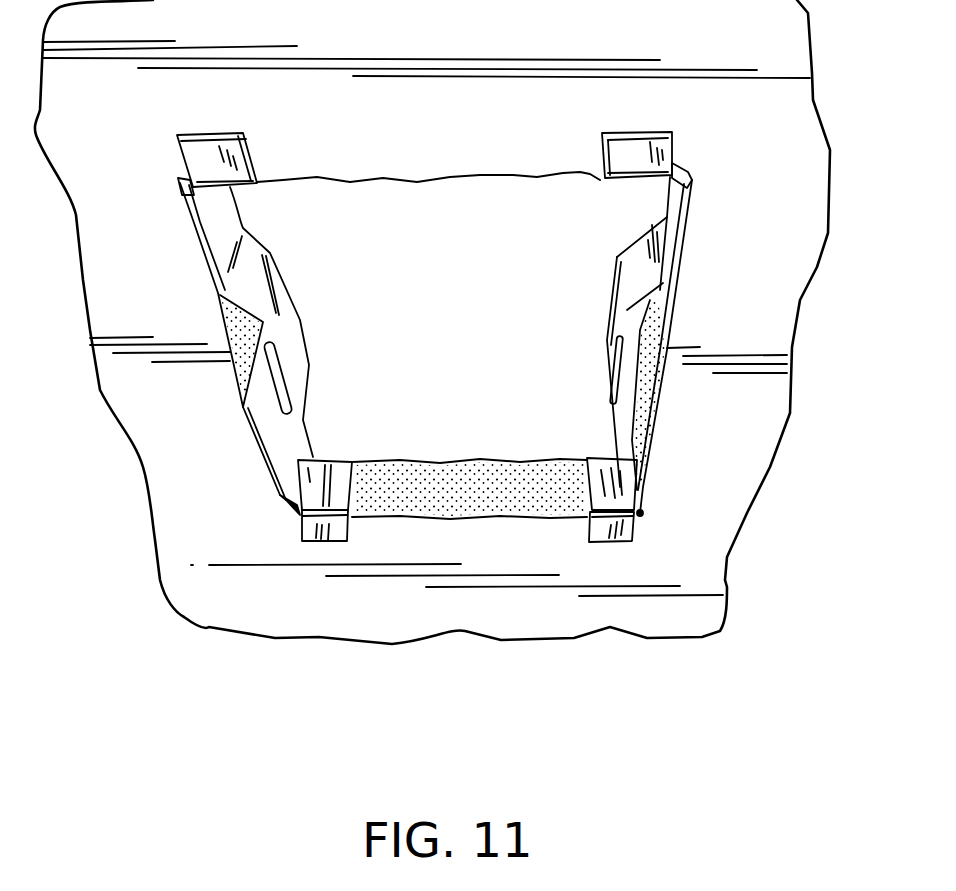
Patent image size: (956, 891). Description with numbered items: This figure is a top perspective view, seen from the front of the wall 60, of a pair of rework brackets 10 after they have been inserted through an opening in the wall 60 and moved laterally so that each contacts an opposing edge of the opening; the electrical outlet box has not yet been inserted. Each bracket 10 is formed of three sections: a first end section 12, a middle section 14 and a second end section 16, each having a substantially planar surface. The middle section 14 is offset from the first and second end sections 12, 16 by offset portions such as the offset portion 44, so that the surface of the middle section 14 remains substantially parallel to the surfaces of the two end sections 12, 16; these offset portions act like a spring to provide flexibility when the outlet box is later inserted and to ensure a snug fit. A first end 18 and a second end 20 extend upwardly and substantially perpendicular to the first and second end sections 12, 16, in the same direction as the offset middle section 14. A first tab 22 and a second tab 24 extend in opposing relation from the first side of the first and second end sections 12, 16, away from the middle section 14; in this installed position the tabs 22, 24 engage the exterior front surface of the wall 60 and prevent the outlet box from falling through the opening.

The bracket 10 is at (475, 339).
The first end section 12 is at (220, 227).
The middle section 14 is at (283, 330).
The second end section 16 is at (313, 458).
The first end 18 is at (597, 492).
The second end 20 is at (465, 563).
The first tab 22 is at (197, 143).
The second tab 24 is at (642, 148).
The offset portion 44 is at (642, 258).
The wall 60 is at (412, 120).